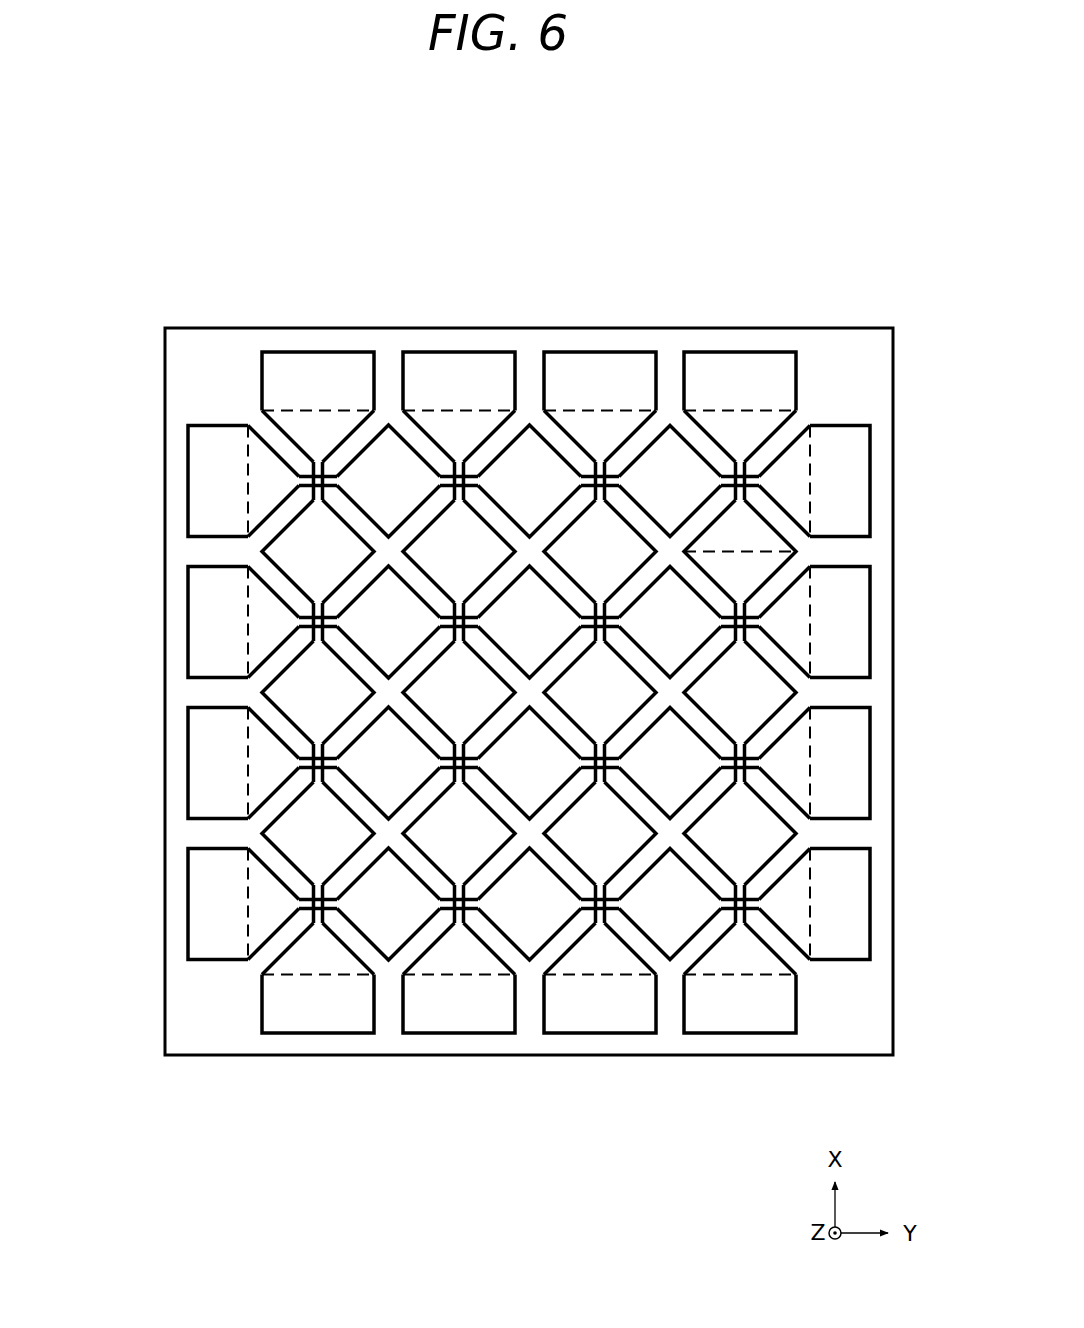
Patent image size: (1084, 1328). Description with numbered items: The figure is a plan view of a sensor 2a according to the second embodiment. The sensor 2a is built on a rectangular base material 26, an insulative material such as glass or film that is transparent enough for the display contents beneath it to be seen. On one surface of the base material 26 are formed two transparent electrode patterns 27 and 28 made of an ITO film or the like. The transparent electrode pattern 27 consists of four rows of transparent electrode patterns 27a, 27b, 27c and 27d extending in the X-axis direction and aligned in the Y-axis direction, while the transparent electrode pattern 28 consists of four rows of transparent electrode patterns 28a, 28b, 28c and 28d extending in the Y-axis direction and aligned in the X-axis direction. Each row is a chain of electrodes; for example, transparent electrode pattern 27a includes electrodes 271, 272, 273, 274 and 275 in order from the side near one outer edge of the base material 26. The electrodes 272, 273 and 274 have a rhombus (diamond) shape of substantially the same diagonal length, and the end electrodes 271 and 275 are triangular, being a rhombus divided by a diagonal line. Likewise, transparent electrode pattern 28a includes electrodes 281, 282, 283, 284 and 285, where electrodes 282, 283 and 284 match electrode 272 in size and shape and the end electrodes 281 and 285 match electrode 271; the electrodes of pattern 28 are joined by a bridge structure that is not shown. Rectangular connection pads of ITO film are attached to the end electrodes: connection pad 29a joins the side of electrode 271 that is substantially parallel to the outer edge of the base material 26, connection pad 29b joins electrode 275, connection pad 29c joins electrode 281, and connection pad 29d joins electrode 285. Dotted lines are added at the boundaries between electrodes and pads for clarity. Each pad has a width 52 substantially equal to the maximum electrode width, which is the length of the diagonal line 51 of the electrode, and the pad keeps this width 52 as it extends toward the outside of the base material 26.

The sensor 2a is at (526, 180).
The base material 26 is at (838, 328).
The transparent electrode pattern 27 is at (735, 1119).
The transparent electrode pattern 27a is at (318, 962).
The transparent electrode pattern 27b is at (459, 962).
The transparent electrode pattern 27c is at (600, 962).
The transparent electrode pattern 27d is at (740, 962).
The transparent electrode pattern 28 is at (88, 503).
The transparent electrode pattern 28a is at (258, 494).
The transparent electrode pattern 28b is at (258, 621).
The transparent electrode pattern 28c is at (258, 762).
The transparent electrode pattern 28d is at (258, 904).
The connection pad 29a is at (285, 1020).
The connection pad 29b is at (275, 362).
The connection pad 29c is at (203, 460).
The connection pad 29d is at (850, 485).
The diagonal line 51 is at (765, 551).
The width 52 is at (765, 410).
The electrode 271 is at (297, 958).
The electrode 272 is at (297, 830).
The electrode 273 is at (297, 690).
The electrode 274 is at (297, 552).
The electrode 275 is at (297, 427).
The electrode 281 is at (272, 472).
The electrode 282 is at (389, 460).
The electrode 283 is at (530, 460).
The electrode 284 is at (670, 460).
The electrode 285 is at (786, 470).